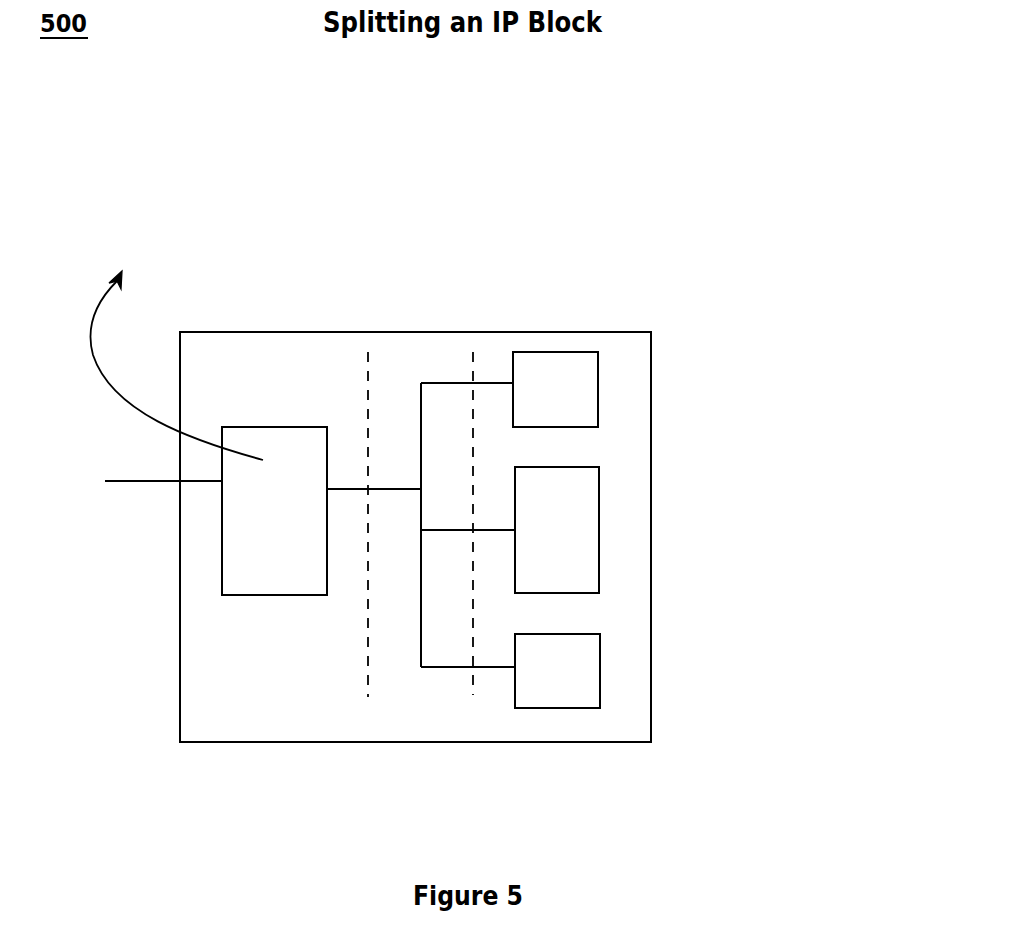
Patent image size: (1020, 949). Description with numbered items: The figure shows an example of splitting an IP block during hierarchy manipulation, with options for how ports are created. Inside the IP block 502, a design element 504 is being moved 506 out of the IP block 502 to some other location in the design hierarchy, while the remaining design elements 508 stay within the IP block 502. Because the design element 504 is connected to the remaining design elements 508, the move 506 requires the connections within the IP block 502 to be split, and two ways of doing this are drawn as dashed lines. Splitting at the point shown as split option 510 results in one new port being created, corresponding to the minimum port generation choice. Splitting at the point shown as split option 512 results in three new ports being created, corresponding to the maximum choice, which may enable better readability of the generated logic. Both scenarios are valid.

The IP block 502 is at (289, 354).
The design element 504 is at (238, 522).
The move 506 is at (176, 333).
The design elements 508 is at (584, 665).
The split option 510 is at (377, 362).
The split option 512 is at (481, 362).